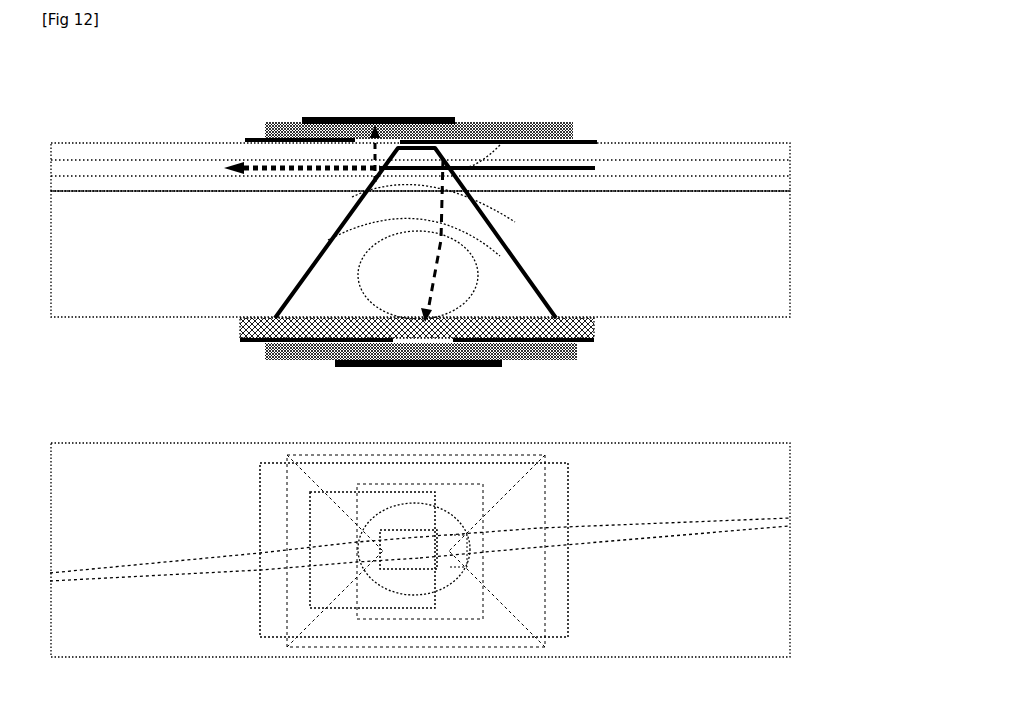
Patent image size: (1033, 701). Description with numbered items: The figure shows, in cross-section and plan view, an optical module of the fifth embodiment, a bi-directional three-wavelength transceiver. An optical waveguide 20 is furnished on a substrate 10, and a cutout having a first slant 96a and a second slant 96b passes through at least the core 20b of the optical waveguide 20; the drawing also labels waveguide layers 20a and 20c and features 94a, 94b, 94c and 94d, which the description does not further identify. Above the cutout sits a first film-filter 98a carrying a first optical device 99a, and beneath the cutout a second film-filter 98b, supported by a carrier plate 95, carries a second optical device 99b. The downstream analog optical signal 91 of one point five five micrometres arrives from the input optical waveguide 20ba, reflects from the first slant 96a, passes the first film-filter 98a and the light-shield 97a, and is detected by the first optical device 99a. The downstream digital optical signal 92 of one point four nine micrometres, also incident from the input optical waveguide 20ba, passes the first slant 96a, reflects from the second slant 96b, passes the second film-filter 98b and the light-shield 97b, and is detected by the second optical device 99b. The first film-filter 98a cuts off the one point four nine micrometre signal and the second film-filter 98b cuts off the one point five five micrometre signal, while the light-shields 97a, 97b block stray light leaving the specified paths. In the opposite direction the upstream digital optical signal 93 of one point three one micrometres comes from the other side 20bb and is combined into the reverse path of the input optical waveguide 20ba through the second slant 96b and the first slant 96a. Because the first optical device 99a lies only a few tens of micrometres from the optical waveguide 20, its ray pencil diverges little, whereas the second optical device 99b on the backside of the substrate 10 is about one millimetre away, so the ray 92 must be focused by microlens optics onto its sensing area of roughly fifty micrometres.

The substrate 10 is at (773, 222).
The optical waveguide 20 is at (848, 140).
The lower cladding layer 20a is at (777, 182).
The core 20b is at (781, 170).
The upper cladding layer 20c is at (777, 152).
The input optical waveguide 20ba is at (133, 568).
The other side of the input optical waveguide 20bb is at (650, 522).
The downstream analog optical signal 91 is at (347, 116).
The downstream digital optical signal 92 is at (432, 325).
The upstream digital optical signal 93 is at (226, 165).
The first light path 94a is at (500, 145).
The second light path 94b is at (527, 247).
The third light path 94c is at (555, 250).
The fourth light path 94d is at (572, 248).
The carrier plate 95 is at (596, 328).
The first slant 96a is at (383, 135).
The second slant 96b is at (468, 139).
The light-shield 97a is at (243, 139).
The light-shield 97b is at (243, 341).
The first film-filter 98a is at (268, 121).
The second film-filter 98b is at (287, 358).
The first optical device 99a is at (306, 116).
The second optical device 99b is at (338, 367).